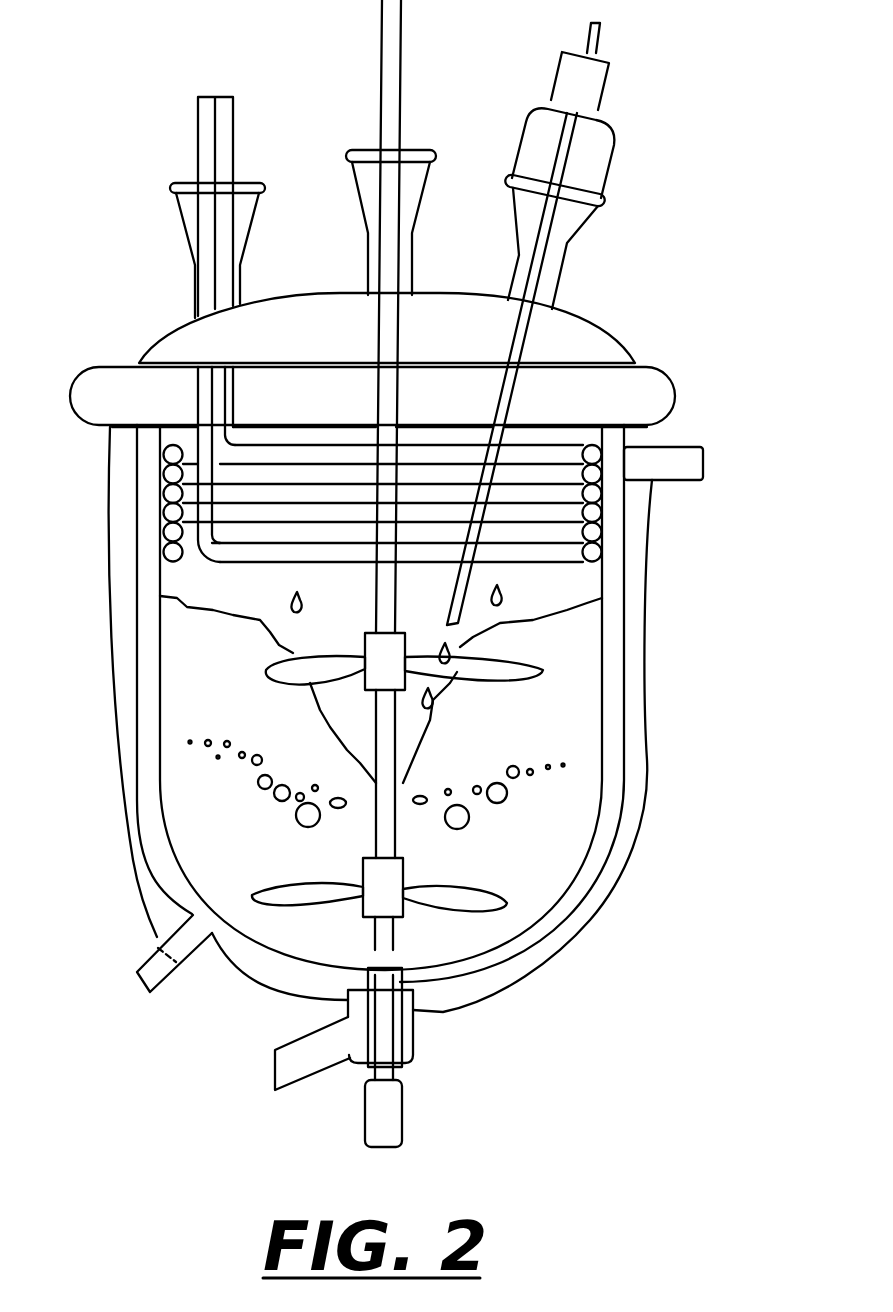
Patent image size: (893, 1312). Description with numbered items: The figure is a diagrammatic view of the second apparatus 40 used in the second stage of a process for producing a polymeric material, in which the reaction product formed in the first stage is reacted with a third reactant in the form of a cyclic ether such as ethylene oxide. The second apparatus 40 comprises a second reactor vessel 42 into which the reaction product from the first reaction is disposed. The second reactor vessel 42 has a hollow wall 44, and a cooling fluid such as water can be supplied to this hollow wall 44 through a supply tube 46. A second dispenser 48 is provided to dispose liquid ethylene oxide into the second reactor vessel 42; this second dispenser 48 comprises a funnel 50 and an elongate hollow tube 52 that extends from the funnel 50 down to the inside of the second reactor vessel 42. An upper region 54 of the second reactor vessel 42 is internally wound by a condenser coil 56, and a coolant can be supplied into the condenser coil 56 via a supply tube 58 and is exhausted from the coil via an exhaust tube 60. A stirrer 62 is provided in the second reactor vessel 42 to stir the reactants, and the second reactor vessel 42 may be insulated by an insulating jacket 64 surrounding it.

The second apparatus 40 is at (542, 1030).
The second reactor vessel 42 is at (618, 695).
The hollow wall 44 is at (612, 640).
The supply tube 46 is at (137, 977).
The second dispenser 48 is at (583, 248).
The funnel 50 is at (592, 170).
The elongate hollow tube 52 is at (508, 388).
The upper region 54 is at (617, 518).
The condenser coil 56 is at (273, 509).
The supply tube 58 is at (207, 268).
The exhaust tube 60 is at (223, 143).
The stirrer 62 is at (463, 852).
The insulating jacket 64 is at (640, 813).